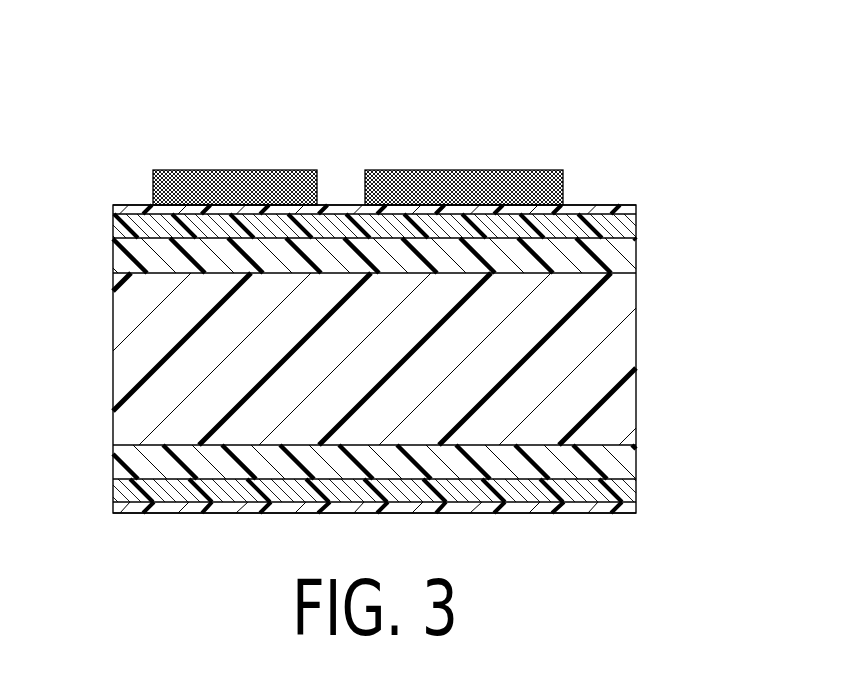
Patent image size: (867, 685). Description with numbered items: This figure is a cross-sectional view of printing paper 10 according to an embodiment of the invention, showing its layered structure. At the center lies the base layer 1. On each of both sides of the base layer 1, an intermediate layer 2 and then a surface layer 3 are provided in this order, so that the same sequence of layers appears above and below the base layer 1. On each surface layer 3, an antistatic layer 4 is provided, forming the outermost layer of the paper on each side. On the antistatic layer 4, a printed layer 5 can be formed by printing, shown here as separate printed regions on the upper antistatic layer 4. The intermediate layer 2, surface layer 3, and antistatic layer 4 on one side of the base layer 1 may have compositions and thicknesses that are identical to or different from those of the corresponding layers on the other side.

The printing paper 10 is at (656, 99).
The base layer 1 is at (636, 348).
The intermediate layer 2 is at (636, 258).
The surface layer 3 is at (636, 222).
The antistatic layer 4 is at (113, 208).
The printed layer 5 is at (283, 170).